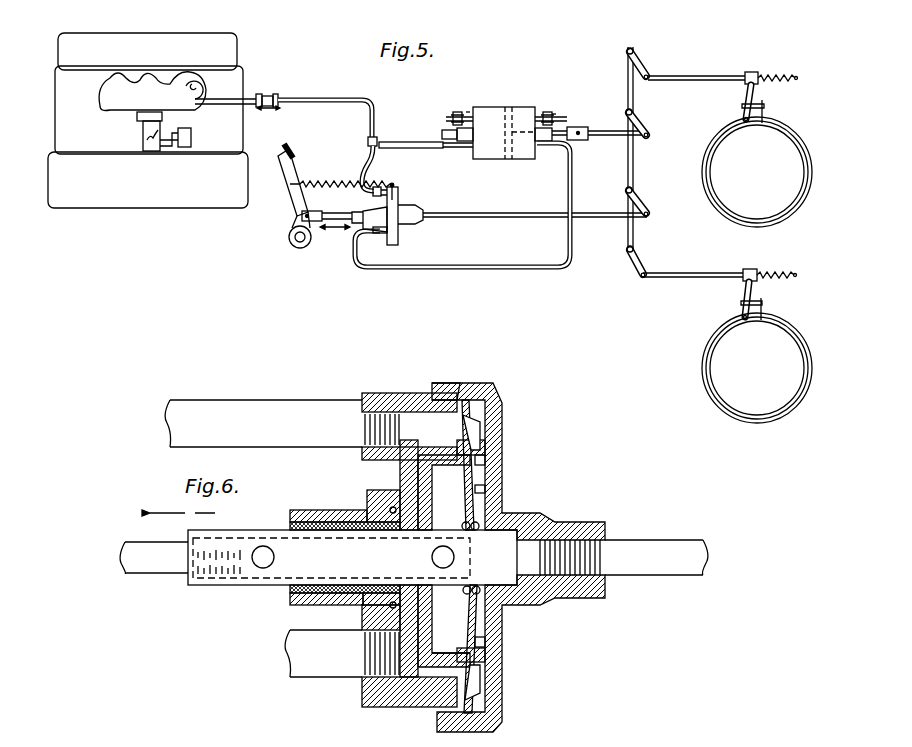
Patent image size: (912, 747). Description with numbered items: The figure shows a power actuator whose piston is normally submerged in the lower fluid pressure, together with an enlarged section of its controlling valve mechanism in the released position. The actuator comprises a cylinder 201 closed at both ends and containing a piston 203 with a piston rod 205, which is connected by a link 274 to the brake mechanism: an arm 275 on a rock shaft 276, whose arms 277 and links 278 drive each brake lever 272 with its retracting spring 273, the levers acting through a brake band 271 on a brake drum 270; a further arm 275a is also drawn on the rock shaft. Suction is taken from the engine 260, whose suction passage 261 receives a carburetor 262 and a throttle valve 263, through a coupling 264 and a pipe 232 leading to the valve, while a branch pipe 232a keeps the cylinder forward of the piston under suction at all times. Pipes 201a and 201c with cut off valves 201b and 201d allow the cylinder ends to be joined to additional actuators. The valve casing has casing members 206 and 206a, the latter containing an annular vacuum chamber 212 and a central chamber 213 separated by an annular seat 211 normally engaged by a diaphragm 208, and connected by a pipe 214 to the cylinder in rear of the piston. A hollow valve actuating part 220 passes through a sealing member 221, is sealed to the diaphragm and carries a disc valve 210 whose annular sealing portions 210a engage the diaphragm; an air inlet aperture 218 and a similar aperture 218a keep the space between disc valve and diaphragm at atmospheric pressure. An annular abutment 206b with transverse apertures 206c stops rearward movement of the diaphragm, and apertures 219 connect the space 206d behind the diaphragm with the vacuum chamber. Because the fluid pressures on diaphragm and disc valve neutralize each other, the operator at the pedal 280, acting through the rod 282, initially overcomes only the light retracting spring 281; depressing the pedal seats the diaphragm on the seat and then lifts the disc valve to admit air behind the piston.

In FIG. 5, the internal combustion engine 260 is at (236, 48).
In FIG. 5, the suction passage 261 is at (108, 100).
In FIG. 5, the carburetor 262 is at (136, 123).
In FIG. 5, the throttle valve 263 is at (142, 152).
In FIG. 5, the pipe coupling 264 is at (270, 96).
In FIG. 5, the pipe 232 is at (370, 180).
In FIG. 6, the pipe 232 is at (290, 418).
In FIG. 5, the branch pipe 232a is at (409, 134).
In FIG. 5, the cylinder 201 is at (490, 111).
In FIG. 5, the pipe 201a is at (466, 114).
In FIG. 5, the cut off valve 201b is at (455, 112).
In FIG. 5, the pipe 201c is at (548, 111).
In FIG. 5, the cut off valve 201d is at (556, 113).
In FIG. 5, the piston 203 is at (507, 160).
In FIG. 5, the piston rod 205 is at (572, 128).
In FIG. 5, the link 274 is at (612, 138).
In FIG. 6, the link 274 is at (683, 572).
In FIG. 5, the pipe 214 is at (492, 269).
In FIG. 6, the pipe 214 is at (300, 662).
In FIG. 5, the casing member 206 is at (395, 245).
In FIG. 6, the casing member 206 is at (484, 393).
In FIG. 5, the casing member 206a is at (398, 203).
In FIG. 6, the casing member 206a is at (402, 393).
In FIG. 6, the annular abutment 206b is at (486, 463).
In FIG. 6, the transverse apertures 206c is at (486, 653).
In FIG. 6, the space 206d is at (481, 610).
In FIG. 5, the retracting spring 281 is at (291, 185).
In FIG. 5, the operator operated part 280 is at (285, 192).
In FIG. 5, the pedal rod 282 is at (313, 213).
In FIG. 6, the pedal rod 282 is at (150, 572).
In FIG. 5, the rock shaft 276 is at (636, 152).
In FIG. 5, the arms 277 is at (641, 263).
In FIG. 5, the arm 275 is at (652, 122).
In FIG. 5, the lever 275a is at (647, 210).
In FIG. 5, the links 278 is at (714, 273).
In FIG. 5, the retracting spring 273 is at (779, 163).
In FIG. 5, the brake lever 272 is at (756, 292).
In FIG. 5, the brake band 271 is at (694, 357).
In FIG. 5, the brake drum 270 is at (703, 377).
In FIG. 6, the annular seat 211 is at (404, 700).
In FIG. 6, the annular vacuum chamber 212 is at (436, 395).
In FIG. 6, the valve actuating part 220 is at (230, 585).
In FIG. 6, the air inlet aperture 218 is at (264, 547).
In FIG. 6, the aperture 218a is at (432, 558).
In FIG. 6, the sealing member 221 is at (363, 518).
In FIG. 6, the central chamber 213 is at (366, 610).
In FIG. 6, the disc valve 210 is at (418, 483).
In FIG. 6, the annular sealing portions 210a is at (460, 664).
In FIG. 6, the apertures 219 is at (472, 693).
In FIG. 6, the diaphragm 208 is at (476, 628).